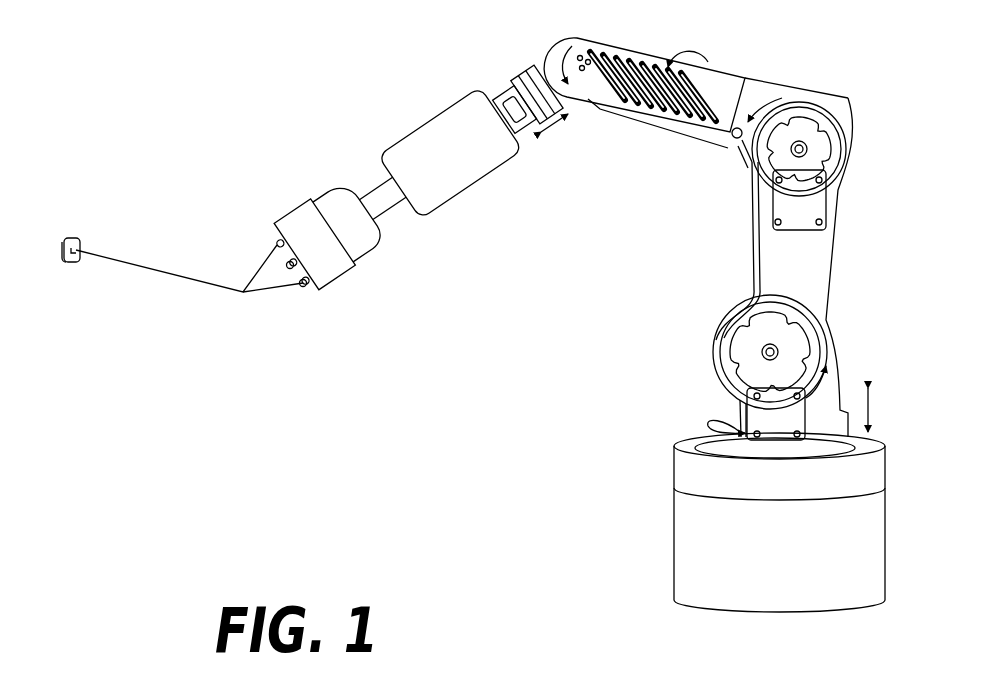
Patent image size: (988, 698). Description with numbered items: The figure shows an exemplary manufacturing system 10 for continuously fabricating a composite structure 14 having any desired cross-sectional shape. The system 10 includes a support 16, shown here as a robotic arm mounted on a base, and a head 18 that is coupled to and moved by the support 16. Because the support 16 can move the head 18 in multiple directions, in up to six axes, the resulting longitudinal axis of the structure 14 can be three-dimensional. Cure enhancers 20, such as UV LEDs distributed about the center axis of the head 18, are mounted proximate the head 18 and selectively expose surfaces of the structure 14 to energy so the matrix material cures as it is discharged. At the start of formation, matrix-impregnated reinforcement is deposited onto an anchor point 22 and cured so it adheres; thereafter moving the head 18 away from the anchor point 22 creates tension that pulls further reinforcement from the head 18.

The system 10 is at (147, 57).
The composite structure 14 is at (172, 272).
The support 16 is at (808, 261).
The head 18 is at (370, 250).
The cure enhancer 20 is at (290, 269).
The anchor point 22 is at (72, 264).